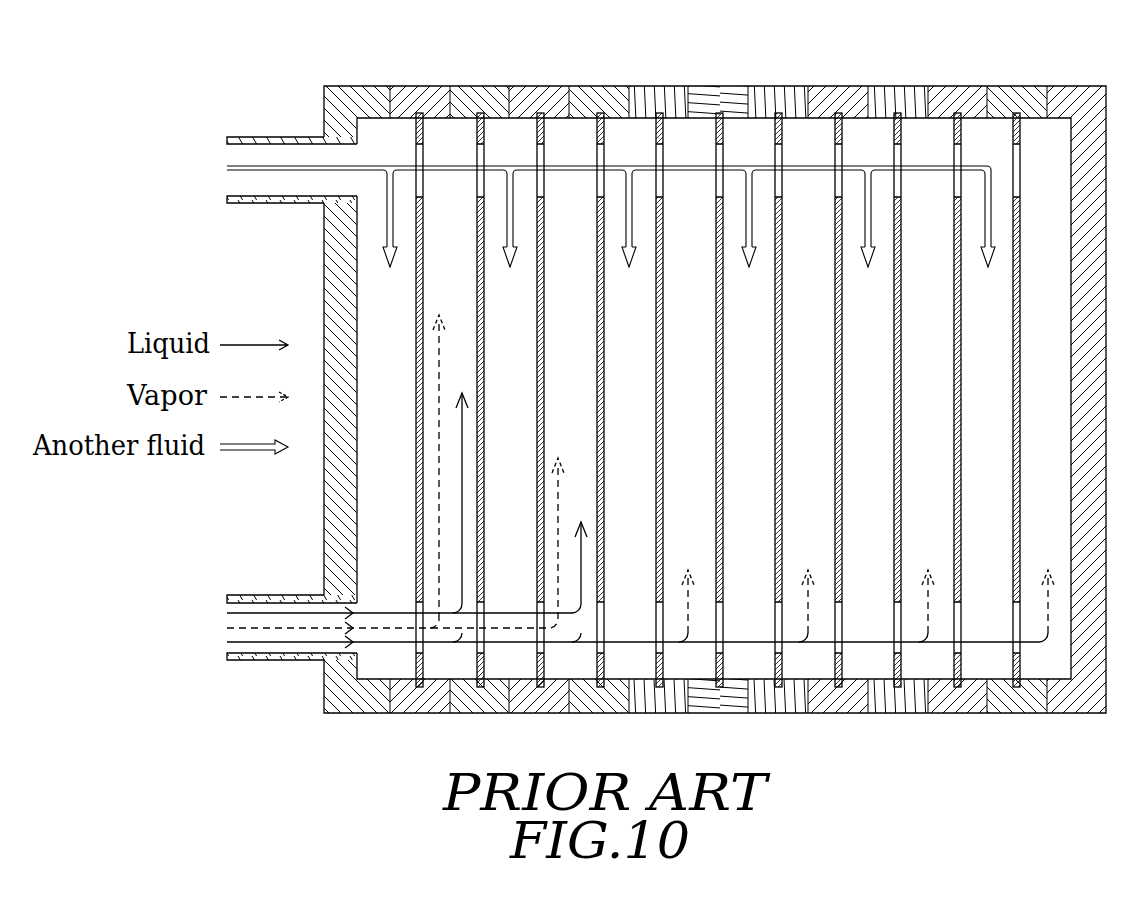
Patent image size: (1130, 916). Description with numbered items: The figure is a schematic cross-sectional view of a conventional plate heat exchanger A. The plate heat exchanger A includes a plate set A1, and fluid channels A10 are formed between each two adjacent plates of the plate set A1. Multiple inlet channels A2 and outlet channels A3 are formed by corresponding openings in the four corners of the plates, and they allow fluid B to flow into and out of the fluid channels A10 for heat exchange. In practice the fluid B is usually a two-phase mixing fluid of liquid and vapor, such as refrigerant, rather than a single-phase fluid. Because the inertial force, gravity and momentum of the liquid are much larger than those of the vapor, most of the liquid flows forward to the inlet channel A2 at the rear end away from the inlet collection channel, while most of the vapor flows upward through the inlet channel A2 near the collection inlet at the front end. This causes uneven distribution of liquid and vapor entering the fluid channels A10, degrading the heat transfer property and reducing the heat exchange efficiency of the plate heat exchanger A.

The plate heat exchanger A is at (313, 78).
The plate set A1 is at (598, 113).
The inlet channel A2 is at (440, 672).
The outlet channel A3 is at (462, 136).
The fluid channel A10 is at (764, 228).
The fluid B is at (388, 226).